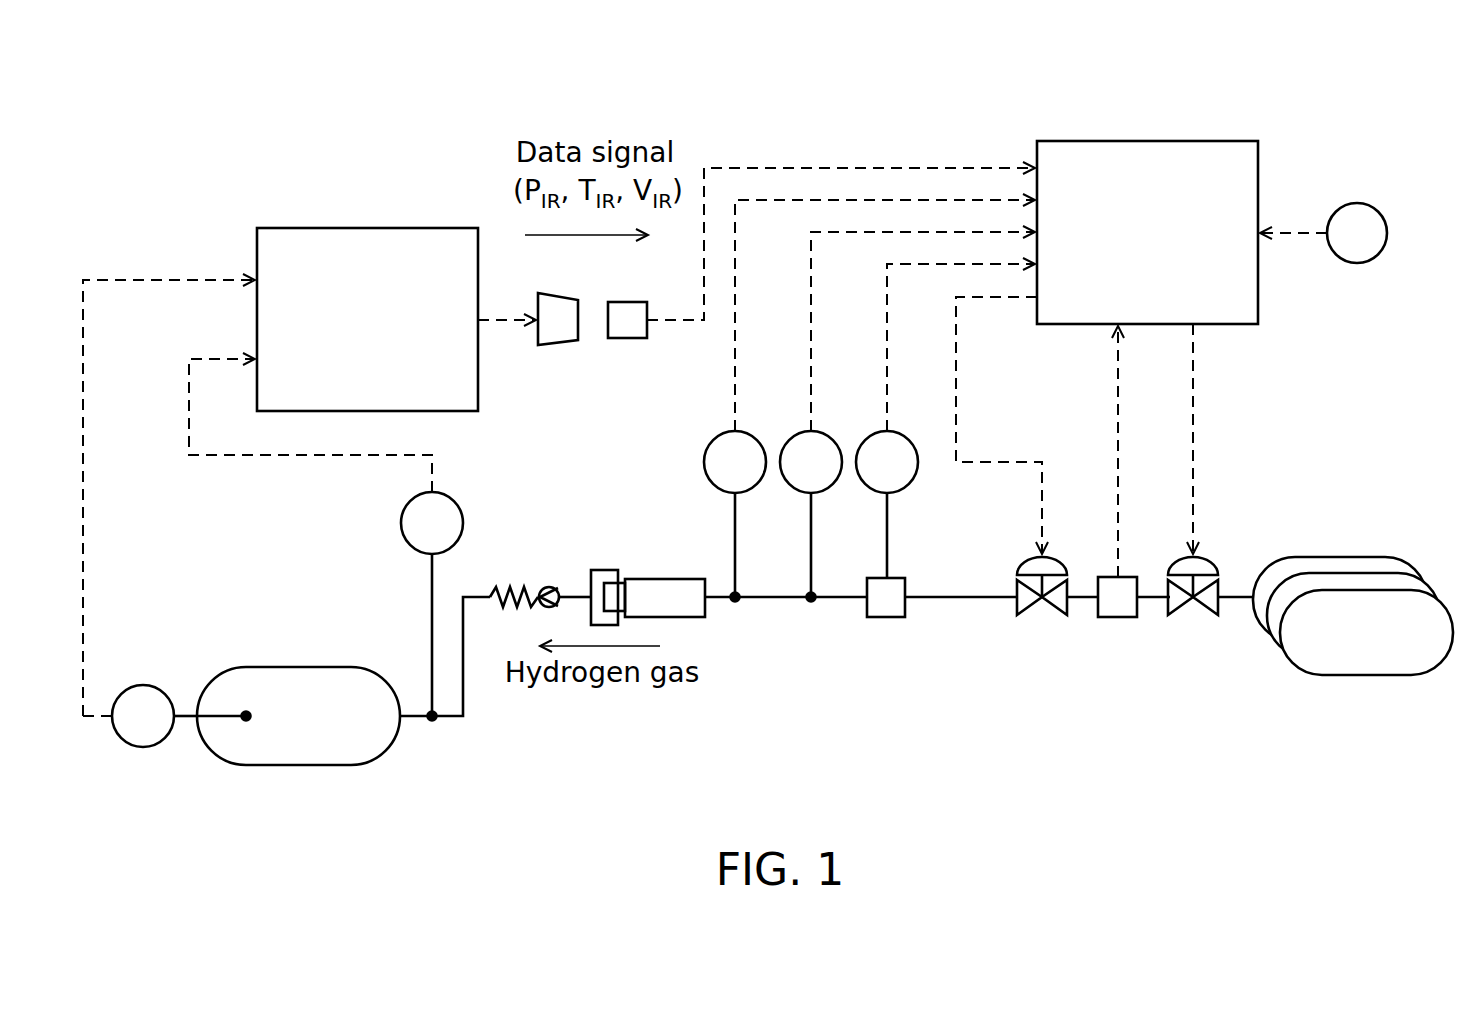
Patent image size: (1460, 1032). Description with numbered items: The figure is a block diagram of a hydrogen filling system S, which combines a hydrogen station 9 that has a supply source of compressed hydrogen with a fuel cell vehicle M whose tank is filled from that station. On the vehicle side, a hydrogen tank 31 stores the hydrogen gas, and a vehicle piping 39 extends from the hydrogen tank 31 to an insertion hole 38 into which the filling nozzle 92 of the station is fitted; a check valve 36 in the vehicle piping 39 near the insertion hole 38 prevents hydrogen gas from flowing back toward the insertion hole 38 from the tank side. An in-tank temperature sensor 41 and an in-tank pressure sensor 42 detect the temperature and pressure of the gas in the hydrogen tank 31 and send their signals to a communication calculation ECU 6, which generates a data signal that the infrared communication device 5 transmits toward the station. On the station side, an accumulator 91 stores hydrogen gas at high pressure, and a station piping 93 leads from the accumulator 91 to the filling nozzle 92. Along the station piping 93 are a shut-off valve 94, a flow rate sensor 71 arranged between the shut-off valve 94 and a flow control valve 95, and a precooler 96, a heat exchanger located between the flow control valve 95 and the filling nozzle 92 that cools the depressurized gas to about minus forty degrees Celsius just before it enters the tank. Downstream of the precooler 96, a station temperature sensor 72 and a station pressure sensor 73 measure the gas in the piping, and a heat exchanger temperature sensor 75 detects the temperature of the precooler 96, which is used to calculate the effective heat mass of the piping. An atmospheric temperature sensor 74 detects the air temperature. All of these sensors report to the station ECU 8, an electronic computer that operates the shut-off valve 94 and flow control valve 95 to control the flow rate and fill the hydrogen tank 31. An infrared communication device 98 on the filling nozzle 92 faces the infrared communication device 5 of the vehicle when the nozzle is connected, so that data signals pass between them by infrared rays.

The hydrogen filling system S is at (214, 103).
The fuel cell vehicle M is at (388, 178).
The hydrogen station 9 is at (882, 122).
The communication calculation ECU 6 is at (428, 228).
The infrared communication device 5 is at (558, 293).
The infrared communication device 98 is at (627, 302).
The station ECU 8 is at (1203, 141).
The atmospheric temperature sensor 74 is at (1378, 206).
The station temperature sensor 72 is at (757, 436).
The station pressure sensor 73 is at (833, 436).
The heat exchanger temperature sensor 75 is at (909, 436).
The precooler 96 is at (905, 588).
The station piping 93 is at (722, 600).
The flow control valve 95 is at (1062, 565).
The flow rate sensor 71 is at (1137, 586).
The shut-off valve 94 is at (1213, 565).
The accumulator 91 is at (1310, 560).
The hydrogen tank 31 is at (297, 667).
The in-tank temperature sensor 41 is at (164, 690).
The in-tank pressure sensor 42 is at (453, 497).
The vehicle piping 39 is at (450, 720).
The check valve 36 is at (510, 585).
The insertion hole 38 is at (604, 570).
The filling nozzle 92 is at (663, 579).